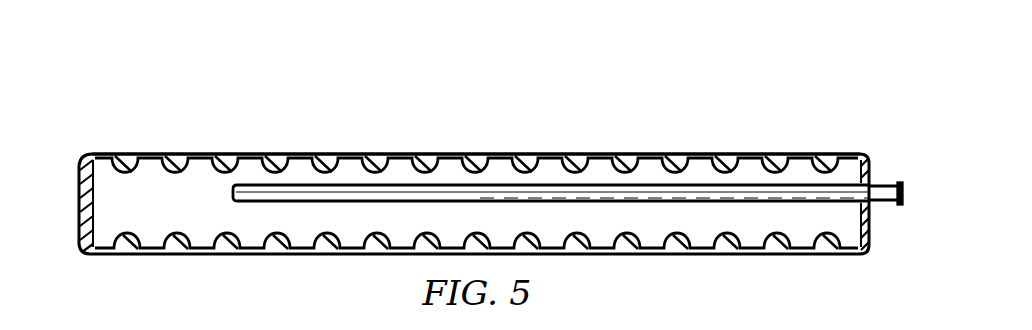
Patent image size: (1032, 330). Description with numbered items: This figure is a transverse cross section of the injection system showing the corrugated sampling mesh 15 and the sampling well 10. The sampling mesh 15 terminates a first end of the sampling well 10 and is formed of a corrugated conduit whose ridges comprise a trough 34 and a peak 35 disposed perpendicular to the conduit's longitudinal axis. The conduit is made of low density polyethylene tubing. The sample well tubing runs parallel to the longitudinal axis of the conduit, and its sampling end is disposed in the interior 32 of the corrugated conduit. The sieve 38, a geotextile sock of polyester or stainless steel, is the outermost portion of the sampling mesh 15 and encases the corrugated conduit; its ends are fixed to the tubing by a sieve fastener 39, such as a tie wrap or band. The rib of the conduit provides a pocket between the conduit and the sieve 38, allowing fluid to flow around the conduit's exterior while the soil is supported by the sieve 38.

The sampling mesh 15 is at (743, 68).
The interior of corrugated conduit 32 is at (107, 182).
The peak 35 is at (357, 154).
The sieve 38 is at (80, 233).
The sieve fastener 39 is at (872, 182).
The trough 34 is at (272, 172).
The sampling well 10 is at (288, 196).